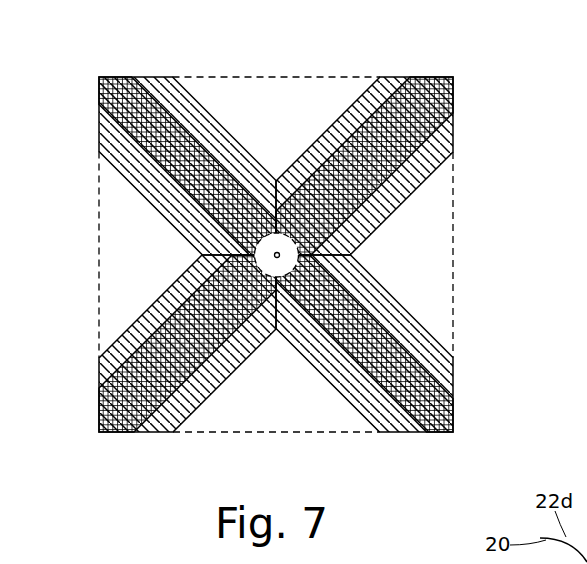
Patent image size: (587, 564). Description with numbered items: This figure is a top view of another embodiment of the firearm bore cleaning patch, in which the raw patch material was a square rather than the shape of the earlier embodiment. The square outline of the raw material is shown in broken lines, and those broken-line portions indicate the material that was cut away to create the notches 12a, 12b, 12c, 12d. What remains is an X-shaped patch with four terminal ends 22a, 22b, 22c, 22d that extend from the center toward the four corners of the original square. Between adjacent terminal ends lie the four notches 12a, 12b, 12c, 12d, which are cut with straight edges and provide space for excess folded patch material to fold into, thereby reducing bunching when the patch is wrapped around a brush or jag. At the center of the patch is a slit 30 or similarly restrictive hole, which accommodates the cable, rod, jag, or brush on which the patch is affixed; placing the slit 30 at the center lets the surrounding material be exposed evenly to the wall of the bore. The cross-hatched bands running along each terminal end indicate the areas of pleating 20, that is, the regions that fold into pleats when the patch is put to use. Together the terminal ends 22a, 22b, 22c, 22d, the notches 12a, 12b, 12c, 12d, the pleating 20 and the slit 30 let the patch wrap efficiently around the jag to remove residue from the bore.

The areas of pleating 20 is at (158, 78).
The terminal end 22a is at (443, 92).
The terminal end 22b is at (442, 432).
The terminal end 22c is at (159, 433).
The terminal end 22d is at (103, 78).
The notch 12a is at (425, 240).
The notch 12b is at (293, 397).
The notch 12c is at (115, 284).
The notch 12d is at (291, 118).
The slit 30 is at (274, 255).